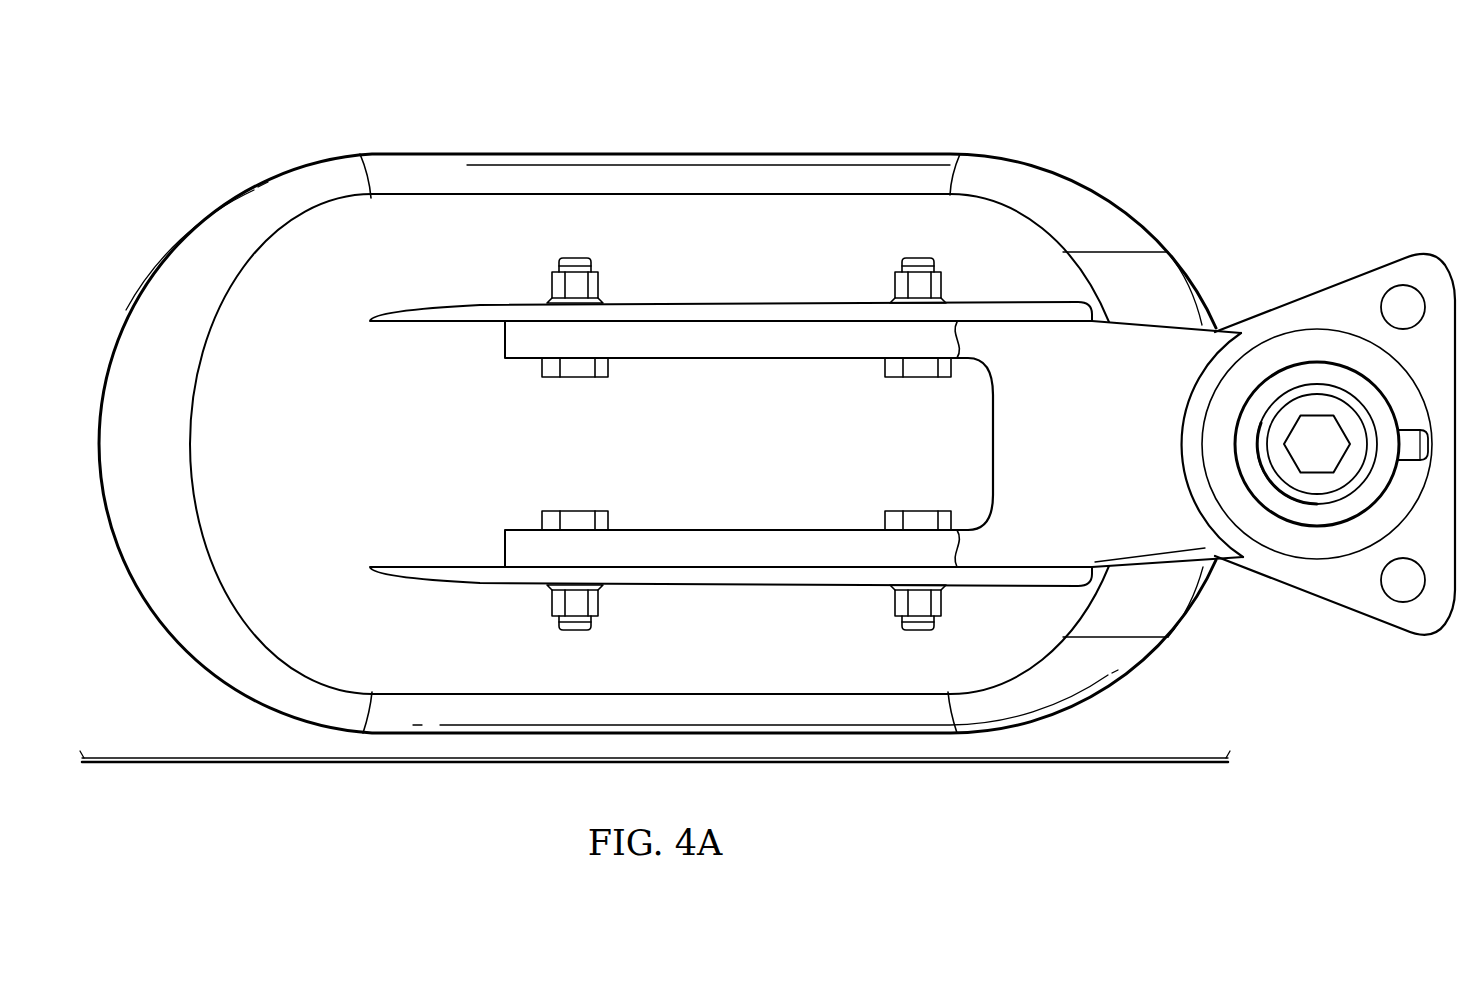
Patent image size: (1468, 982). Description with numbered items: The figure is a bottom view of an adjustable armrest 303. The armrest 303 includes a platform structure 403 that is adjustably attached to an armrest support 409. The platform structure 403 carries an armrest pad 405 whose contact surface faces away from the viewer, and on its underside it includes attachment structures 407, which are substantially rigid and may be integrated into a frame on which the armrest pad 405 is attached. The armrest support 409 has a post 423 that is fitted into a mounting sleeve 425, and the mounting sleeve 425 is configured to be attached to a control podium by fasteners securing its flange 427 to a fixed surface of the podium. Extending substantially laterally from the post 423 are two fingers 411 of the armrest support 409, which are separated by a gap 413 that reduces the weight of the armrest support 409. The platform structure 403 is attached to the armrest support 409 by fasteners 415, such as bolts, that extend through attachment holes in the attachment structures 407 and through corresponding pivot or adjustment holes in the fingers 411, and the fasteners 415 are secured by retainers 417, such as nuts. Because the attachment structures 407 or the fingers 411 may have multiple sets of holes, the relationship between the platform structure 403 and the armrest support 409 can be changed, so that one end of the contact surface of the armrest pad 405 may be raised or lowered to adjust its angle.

The armrest 303 is at (1203, 127).
The platform structure 403 is at (648, 762).
The armrest pad 405 is at (1148, 660).
The attachment structures 407 is at (450, 304).
The armrest support 409 is at (1130, 338).
The fingers 411 is at (505, 348).
The gap 413 is at (430, 447).
The fasteners 415 is at (575, 258).
The retainers 417 is at (552, 290).
The post 423 is at (1313, 387).
The mounting sleeve 425 is at (1317, 527).
The flange 427 is at (1403, 633).